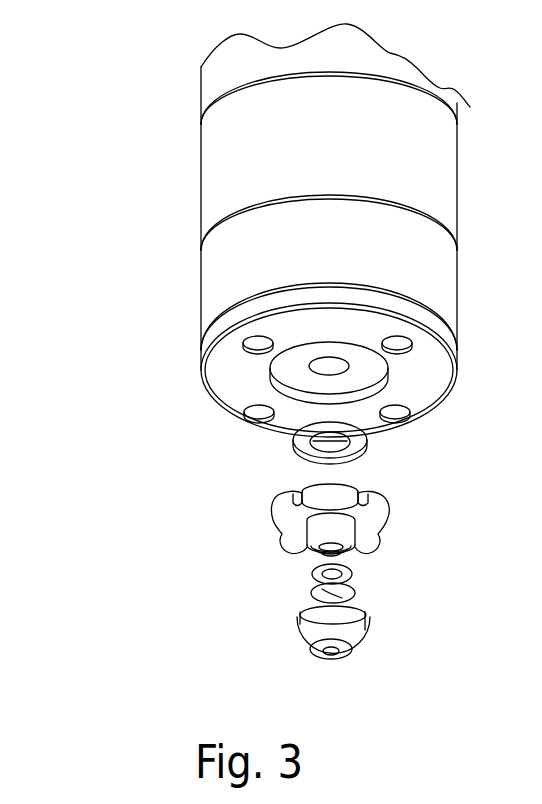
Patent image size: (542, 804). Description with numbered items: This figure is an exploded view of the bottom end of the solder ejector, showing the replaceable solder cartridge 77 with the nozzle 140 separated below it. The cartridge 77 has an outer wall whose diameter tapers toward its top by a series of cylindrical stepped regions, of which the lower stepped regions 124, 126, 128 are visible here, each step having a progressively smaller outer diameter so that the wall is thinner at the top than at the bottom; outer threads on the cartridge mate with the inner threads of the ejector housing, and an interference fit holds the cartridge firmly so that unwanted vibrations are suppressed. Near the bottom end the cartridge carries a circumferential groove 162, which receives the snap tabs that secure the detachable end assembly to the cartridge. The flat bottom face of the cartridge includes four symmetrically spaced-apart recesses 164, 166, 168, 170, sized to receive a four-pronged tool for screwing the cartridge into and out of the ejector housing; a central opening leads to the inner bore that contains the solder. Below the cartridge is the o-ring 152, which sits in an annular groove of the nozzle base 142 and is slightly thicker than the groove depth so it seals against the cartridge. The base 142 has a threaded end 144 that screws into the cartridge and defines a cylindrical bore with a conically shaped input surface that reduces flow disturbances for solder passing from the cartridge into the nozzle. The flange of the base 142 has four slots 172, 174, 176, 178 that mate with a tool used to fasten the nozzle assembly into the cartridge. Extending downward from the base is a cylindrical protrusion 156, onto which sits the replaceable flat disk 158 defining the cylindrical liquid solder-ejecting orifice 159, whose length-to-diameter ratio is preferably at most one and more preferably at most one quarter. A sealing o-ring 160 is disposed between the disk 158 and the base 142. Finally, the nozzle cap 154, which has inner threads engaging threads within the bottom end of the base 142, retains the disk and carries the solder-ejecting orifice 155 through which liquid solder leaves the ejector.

The replaceable solder cartridge 77 is at (160, 130).
The cylindrical stepped region 124 is at (457, 283).
The cylindrical stepped region 126 is at (457, 170).
The cylindrical stepped region 128 is at (457, 108).
The circumferential groove 162 is at (326, 297).
The recess 164 is at (258, 343).
The recess 166 is at (399, 343).
The recess 168 is at (402, 410).
The recess 170 is at (258, 408).
The o-ring 152 is at (296, 445).
The nozzle 140 is at (118, 462).
The base 142 is at (377, 523).
The threaded end 144 is at (334, 485).
The slot 172 is at (294, 491).
The slot 174 is at (364, 497).
The slot 176 is at (366, 548).
The slot 178 is at (302, 546).
The cylindrical protrusion 156 is at (316, 555).
The sealing o-ring 160 is at (353, 570).
The replaceable flat disk 158 is at (353, 588).
The liquid solder-ejecting orifice 159 is at (311, 597).
The nozzle cap 154 is at (360, 613).
The solder-ejecting orifice 155 is at (331, 657).